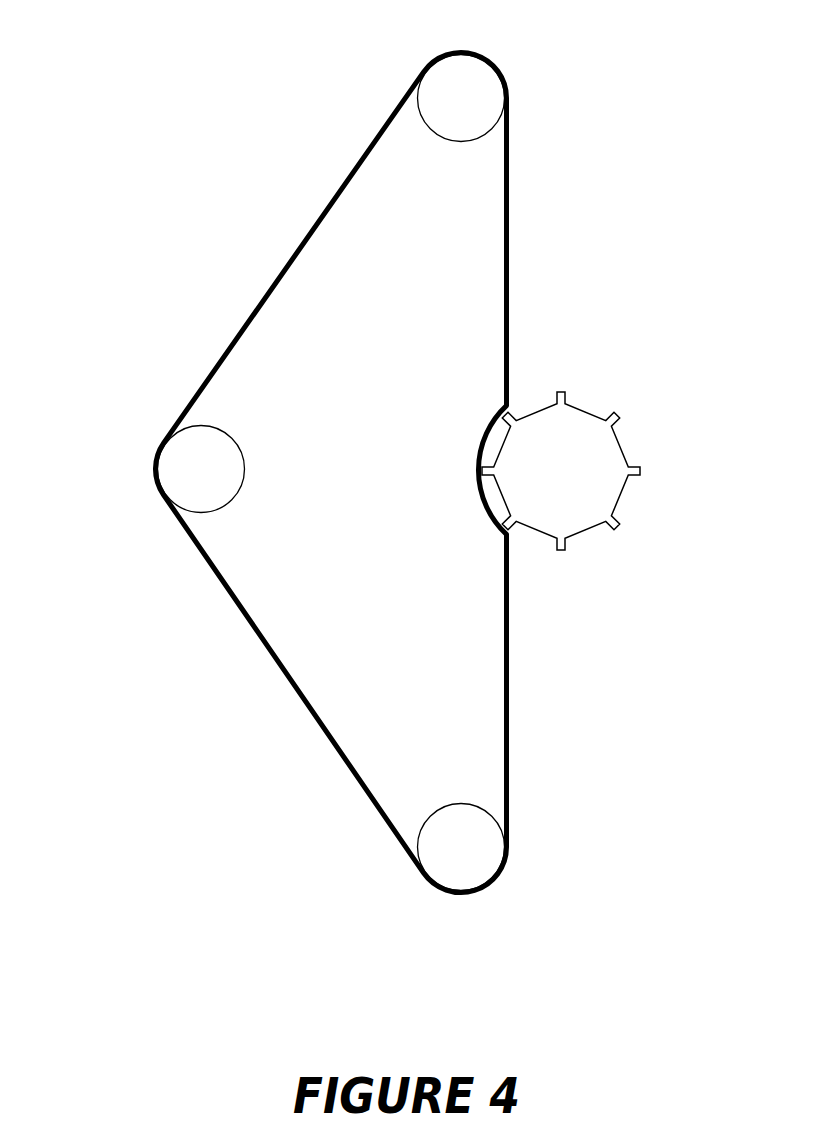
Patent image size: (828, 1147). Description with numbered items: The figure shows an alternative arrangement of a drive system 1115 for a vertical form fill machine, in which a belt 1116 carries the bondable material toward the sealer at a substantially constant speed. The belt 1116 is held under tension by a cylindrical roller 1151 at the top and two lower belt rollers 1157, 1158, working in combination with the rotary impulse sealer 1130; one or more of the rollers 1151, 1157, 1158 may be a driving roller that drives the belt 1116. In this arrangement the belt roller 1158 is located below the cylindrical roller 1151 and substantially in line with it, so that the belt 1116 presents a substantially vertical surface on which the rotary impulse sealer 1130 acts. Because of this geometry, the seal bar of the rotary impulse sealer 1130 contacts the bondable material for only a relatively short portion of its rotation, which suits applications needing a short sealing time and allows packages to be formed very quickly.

The drive system 1115 is at (243, 112).
The belt 1116 is at (297, 262).
The cylindrical roller 1151 is at (483, 85).
The belt roller 1157 is at (178, 439).
The belt roller 1158 is at (435, 853).
The rotary impulse sealer 1130 is at (580, 415).